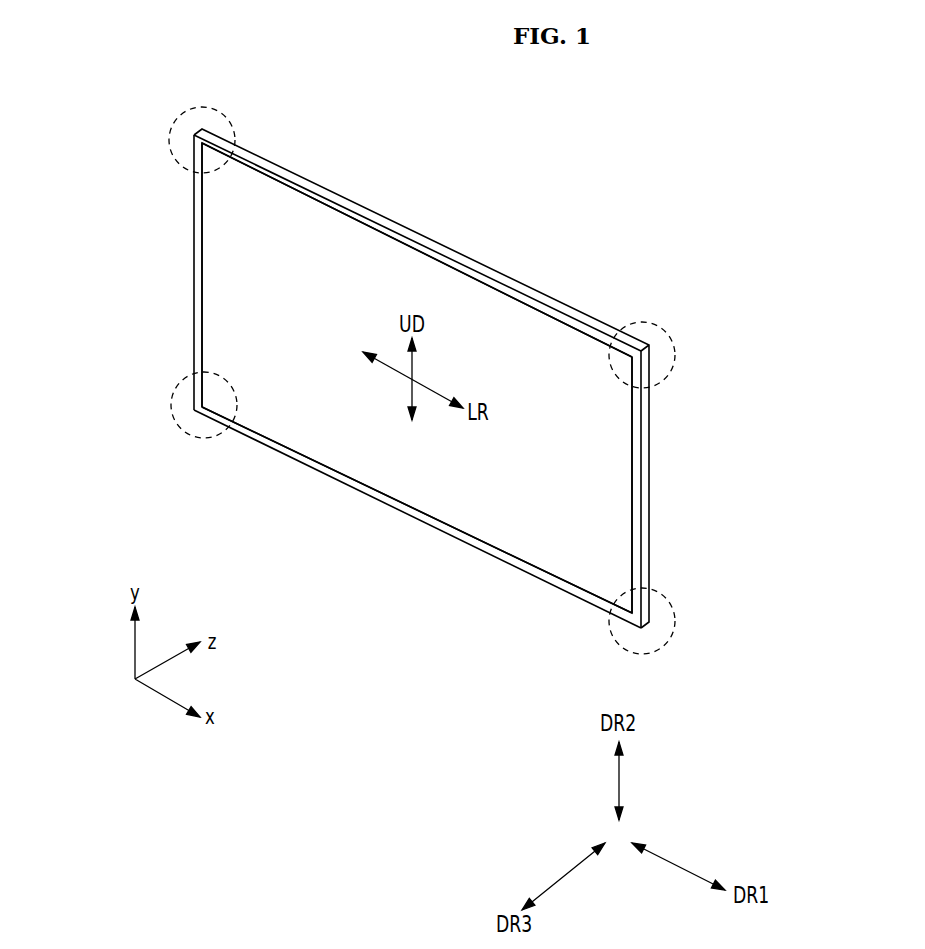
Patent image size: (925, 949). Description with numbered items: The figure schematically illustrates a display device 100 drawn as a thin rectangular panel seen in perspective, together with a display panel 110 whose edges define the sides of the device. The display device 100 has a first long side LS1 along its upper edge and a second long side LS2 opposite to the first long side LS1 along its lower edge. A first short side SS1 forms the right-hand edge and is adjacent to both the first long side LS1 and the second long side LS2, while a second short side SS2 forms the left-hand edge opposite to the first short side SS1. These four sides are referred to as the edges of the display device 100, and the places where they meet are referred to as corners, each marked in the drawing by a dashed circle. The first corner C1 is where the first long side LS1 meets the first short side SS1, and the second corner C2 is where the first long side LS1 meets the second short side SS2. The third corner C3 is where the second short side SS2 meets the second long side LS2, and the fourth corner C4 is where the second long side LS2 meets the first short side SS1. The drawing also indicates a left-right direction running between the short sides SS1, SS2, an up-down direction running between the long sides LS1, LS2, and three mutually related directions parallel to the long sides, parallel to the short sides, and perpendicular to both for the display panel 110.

The display device 100 is at (417, 380).
The display panel 110 is at (213, 312).
The first long side LS1 is at (490, 287).
The second long side LS2 is at (292, 458).
The first short side SS1 is at (633, 483).
The second short side SS2 is at (200, 271).
The first corner C1 is at (655, 355).
The second corner C2 is at (185, 140).
The third corner C3 is at (189, 405).
The fourth corner C4 is at (655, 621).